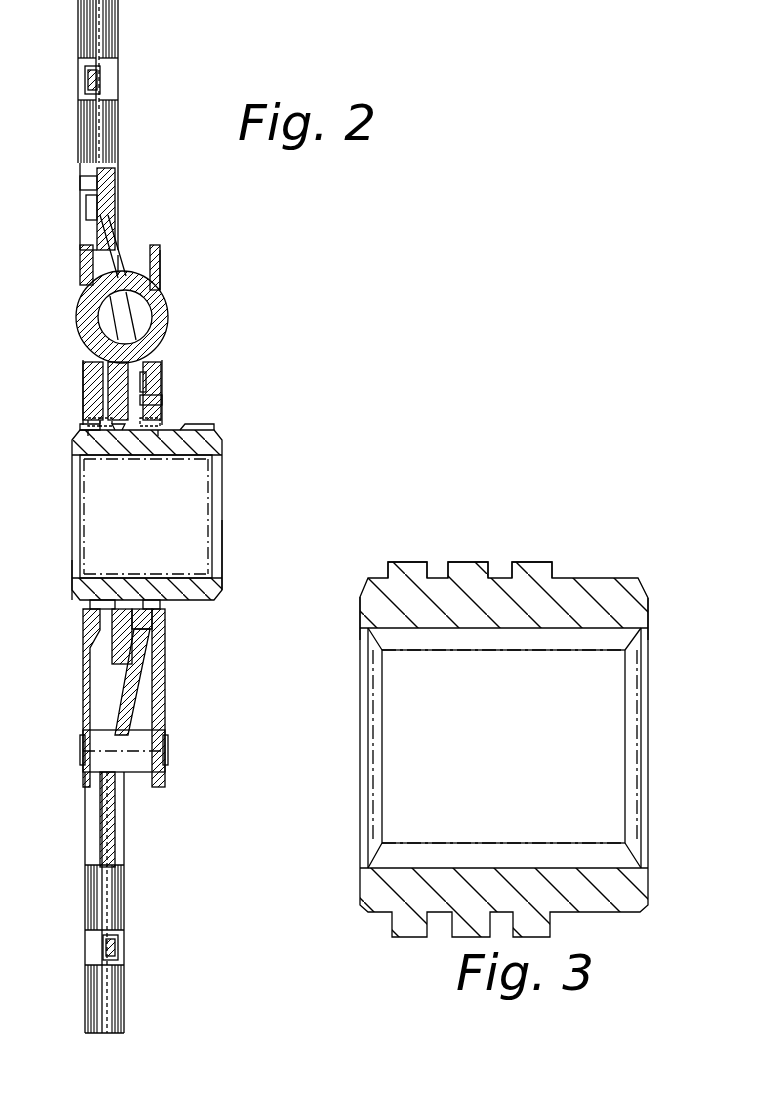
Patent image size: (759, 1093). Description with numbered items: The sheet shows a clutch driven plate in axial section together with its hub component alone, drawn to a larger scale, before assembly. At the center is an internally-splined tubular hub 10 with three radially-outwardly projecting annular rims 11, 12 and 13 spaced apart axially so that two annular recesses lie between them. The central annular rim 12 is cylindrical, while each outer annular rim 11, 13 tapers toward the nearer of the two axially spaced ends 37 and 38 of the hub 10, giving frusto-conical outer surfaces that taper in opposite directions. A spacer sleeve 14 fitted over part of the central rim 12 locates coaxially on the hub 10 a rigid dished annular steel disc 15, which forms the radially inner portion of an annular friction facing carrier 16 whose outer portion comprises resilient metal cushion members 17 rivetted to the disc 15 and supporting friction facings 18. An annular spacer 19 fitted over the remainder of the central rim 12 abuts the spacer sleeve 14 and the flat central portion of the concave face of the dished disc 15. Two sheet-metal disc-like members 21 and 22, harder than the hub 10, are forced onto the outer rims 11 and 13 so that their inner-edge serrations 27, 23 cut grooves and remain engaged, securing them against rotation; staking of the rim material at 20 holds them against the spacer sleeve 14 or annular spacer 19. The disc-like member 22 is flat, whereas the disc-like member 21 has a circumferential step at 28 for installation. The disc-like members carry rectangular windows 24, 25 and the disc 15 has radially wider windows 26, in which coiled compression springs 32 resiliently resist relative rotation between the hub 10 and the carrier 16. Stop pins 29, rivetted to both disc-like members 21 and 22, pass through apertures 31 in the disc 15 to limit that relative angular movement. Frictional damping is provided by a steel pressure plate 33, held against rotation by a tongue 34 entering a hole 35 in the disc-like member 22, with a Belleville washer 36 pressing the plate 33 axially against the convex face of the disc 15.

In FIG. 2, the tubular hub 10 is at (52, 642).
In FIG. 3, the tubular hub 10 is at (504, 749).
In FIG. 2, the outer annular rim 11 is at (60, 470).
In FIG. 3, the outer annular rim 11 is at (408, 562).
In FIG. 2, the central annular rim 12 is at (115, 490).
In FIG. 3, the central annular rim 12 is at (465, 562).
In FIG. 2, the outer annular rim 13 is at (232, 450).
In FIG. 3, the outer annular rim 13 is at (530, 562).
In FIG. 2, the spacer sleeve 14 is at (152, 505).
In FIG. 2, the rigid dished annular steel disc 15 is at (118, 244).
In FIG. 2, the annular friction facing carrier 16 is at (94, 190).
In FIG. 2, the resilient metal cushion members 17 is at (148, 168).
In FIG. 2, the friction facings 18 is at (144, 33).
In FIG. 2, the annular spacer 19 is at (58, 436).
In FIG. 2, the staking 20 is at (196, 640).
In FIG. 2, the disc-like member 21 is at (82, 262).
In FIG. 2, the disc-like member 22 is at (240, 250).
In FIG. 2, the serrations 23 is at (178, 480).
In FIG. 2, the windows 24 is at (92, 370).
In FIG. 2, the windows 25 is at (188, 272).
In FIG. 2, the windows 26 is at (198, 232).
In FIG. 2, the serrations 27 is at (64, 505).
In FIG. 2, the circumferential step 28 is at (100, 400).
In FIG. 2, the stop pins 29 is at (189, 749).
In FIG. 2, the apertures 31 is at (124, 720).
In FIG. 2, the coiled compression springs 32 is at (206, 323).
In FIG. 2, the steel pressure plate 33 is at (248, 391).
In FIG. 2, the tongue 34 is at (250, 347).
In FIG. 2, the hole 35 is at (206, 372).
In FIG. 2, the Belleville washer 36 is at (198, 410).
In FIG. 2, the end of hub 37 is at (78, 598).
In FIG. 3, the end of hub 37 is at (358, 597).
In FIG. 2, the end of hub 38 is at (222, 584).
In FIG. 3, the end of hub 38 is at (650, 597).